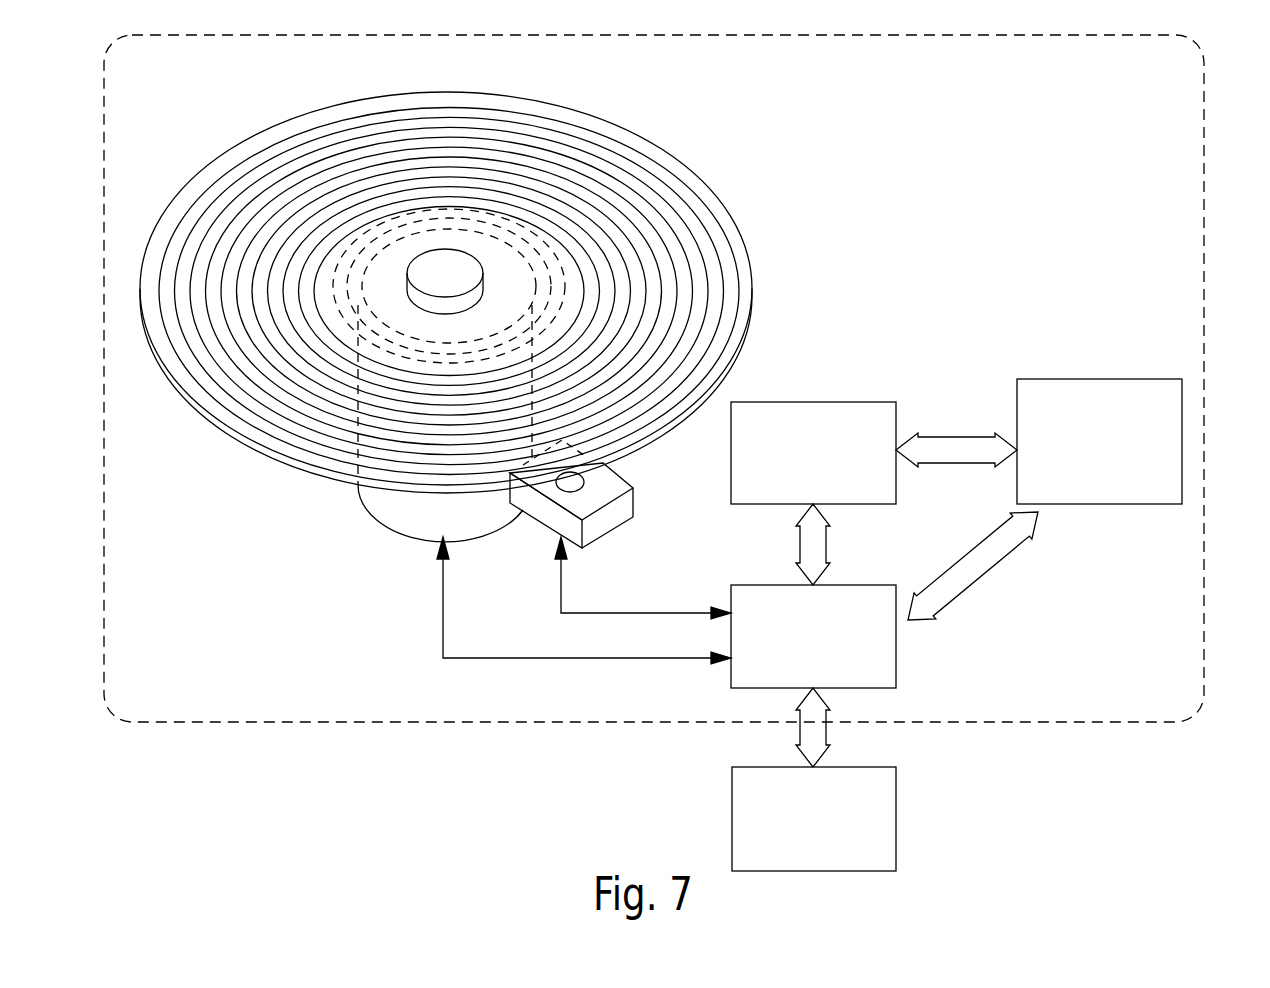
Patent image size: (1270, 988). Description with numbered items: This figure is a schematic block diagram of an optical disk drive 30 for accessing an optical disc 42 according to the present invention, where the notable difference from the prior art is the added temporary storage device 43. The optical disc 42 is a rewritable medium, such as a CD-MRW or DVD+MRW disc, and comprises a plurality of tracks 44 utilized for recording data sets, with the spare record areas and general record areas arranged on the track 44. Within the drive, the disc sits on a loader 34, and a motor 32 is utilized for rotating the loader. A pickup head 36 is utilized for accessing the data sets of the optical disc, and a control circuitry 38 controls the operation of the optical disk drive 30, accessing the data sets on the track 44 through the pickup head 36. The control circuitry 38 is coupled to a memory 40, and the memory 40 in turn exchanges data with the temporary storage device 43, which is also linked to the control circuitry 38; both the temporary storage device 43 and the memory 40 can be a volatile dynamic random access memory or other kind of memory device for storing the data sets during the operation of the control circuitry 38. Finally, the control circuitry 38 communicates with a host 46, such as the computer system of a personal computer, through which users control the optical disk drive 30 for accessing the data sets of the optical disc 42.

The optical disk drive 30 is at (1205, 275).
The motor 32 is at (472, 530).
The loader 34 is at (448, 262).
The pickup head 36 is at (612, 520).
The control circuitry 38 is at (896, 597).
The memory 40 is at (823, 402).
The optical disc 42 is at (745, 292).
The temporary storage device 43 is at (1110, 379).
The track 44 is at (722, 220).
The host 46 is at (896, 800).